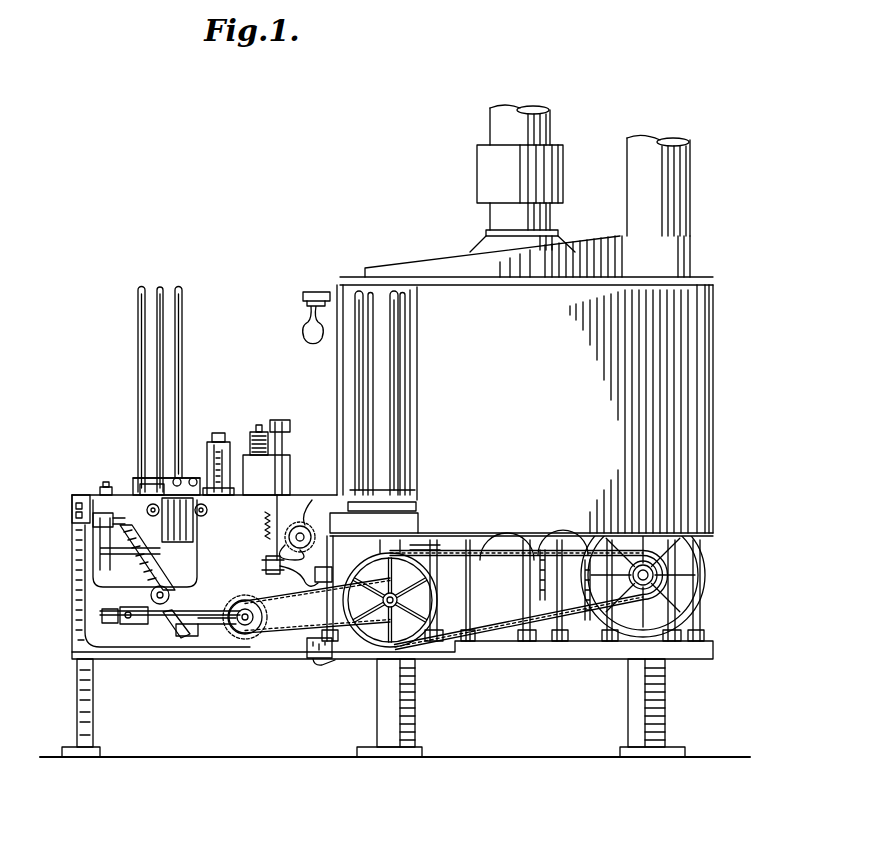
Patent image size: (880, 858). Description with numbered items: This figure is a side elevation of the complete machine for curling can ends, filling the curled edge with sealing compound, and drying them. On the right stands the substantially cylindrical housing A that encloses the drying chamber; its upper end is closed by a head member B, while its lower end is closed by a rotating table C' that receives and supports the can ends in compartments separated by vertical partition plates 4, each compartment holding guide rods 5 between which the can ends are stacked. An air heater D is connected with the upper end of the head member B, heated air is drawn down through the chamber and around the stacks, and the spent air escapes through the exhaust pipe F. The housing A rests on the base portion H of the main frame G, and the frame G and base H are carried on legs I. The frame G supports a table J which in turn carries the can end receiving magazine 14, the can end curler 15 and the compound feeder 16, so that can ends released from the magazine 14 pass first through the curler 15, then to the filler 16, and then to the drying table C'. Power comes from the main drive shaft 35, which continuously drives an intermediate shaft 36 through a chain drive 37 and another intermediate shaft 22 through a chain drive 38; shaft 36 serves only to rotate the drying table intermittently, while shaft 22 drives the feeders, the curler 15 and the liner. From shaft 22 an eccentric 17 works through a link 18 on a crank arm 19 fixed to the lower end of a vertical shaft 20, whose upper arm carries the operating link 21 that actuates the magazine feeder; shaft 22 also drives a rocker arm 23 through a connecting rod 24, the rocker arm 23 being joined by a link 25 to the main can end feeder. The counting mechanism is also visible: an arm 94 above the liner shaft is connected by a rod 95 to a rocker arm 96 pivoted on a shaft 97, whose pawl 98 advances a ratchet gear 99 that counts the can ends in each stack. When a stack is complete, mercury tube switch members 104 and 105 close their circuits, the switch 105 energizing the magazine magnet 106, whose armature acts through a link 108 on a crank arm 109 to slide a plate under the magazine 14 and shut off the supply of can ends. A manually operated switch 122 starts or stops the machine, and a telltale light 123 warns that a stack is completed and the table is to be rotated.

The housing A is at (526, 405).
The head member B is at (492, 251).
The table C' is at (521, 511).
The air heater D is at (492, 169).
The exhaust pipe F is at (676, 180).
The main frame G is at (68, 614).
The base portion H is at (458, 660).
The legs I is at (93, 733).
The table J is at (245, 494).
The partition plates 4 is at (358, 330).
The guide rods 5 is at (388, 302).
The can end receiving magazine 14 is at (155, 362).
The can end curler 15 is at (212, 455).
The compound feeder 16 is at (288, 468).
The eccentric 17 is at (226, 622).
The link 18 is at (160, 620).
The crank arm 19 is at (108, 616).
The vertically disposed shaft 20 is at (110, 570).
The operating link 21 is at (104, 487).
The intermediate drive shaft 22 is at (247, 625).
The rocker arm 23 is at (118, 556).
The connecting rod 24 is at (186, 638).
The link 25 is at (147, 520).
The main drive shaft 35 is at (658, 575).
The intermediate drive shaft 36 is at (388, 608).
The chain drive 37 is at (560, 636).
The chain drive 38 is at (305, 652).
The arm 94 is at (283, 420).
The link or rod 95 is at (286, 495).
The rocker arm 96 is at (262, 540).
The shaft 97 is at (300, 522).
The pawl 98 is at (336, 534).
The ratchet gear 99 is at (312, 500).
The switch member 104 is at (266, 564).
The switch member 105 is at (282, 572).
The magazine magnet 106 is at (178, 528).
The link 108 is at (150, 484).
The crank arm 109 is at (176, 478).
The manually operated switch 122 is at (72, 507).
The telltale light 123 is at (306, 334).